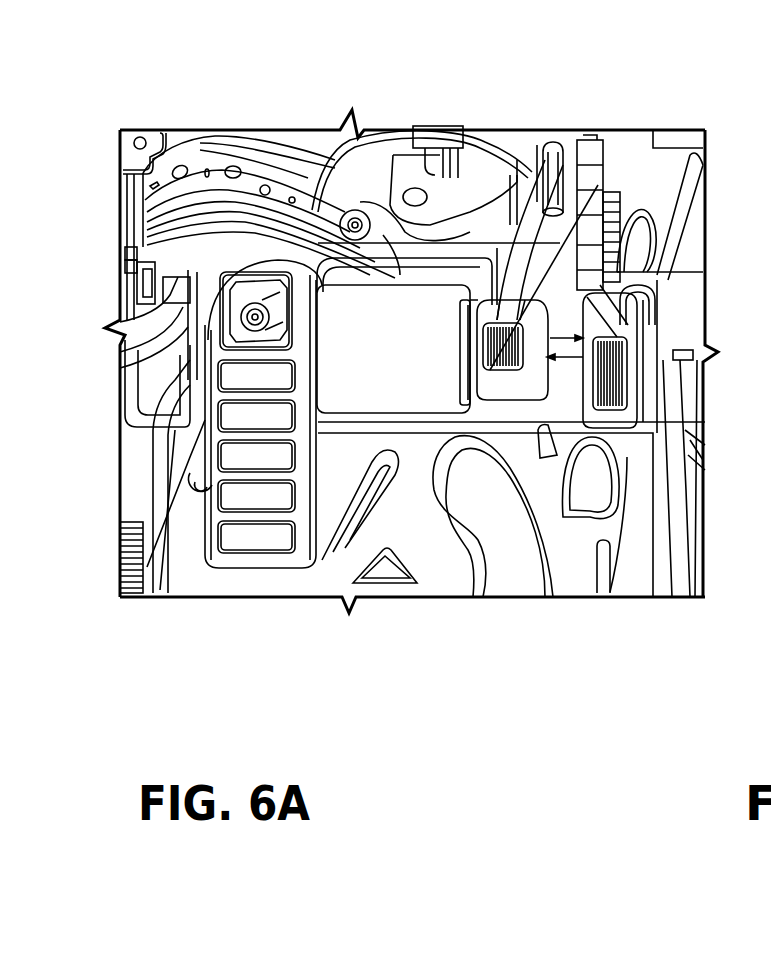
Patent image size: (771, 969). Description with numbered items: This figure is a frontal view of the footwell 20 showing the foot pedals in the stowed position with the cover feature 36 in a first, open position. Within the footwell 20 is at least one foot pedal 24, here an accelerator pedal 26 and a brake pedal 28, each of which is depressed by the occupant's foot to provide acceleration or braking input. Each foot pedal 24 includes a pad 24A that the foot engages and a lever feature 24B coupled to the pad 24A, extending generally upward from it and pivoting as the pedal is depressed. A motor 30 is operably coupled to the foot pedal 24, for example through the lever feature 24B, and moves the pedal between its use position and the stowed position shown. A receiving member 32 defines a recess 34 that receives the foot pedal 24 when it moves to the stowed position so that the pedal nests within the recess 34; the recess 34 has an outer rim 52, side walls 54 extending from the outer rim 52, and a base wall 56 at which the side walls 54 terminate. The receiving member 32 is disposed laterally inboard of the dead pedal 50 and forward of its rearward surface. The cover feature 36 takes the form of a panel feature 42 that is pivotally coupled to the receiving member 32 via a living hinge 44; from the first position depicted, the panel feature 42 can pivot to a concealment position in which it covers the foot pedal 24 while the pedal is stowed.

The footwell 20 is at (662, 555).
The foot pedal 24 is at (522, 165).
The pad 24A is at (598, 185).
The lever feature 24B is at (523, 207).
The accelerator pedal 26 is at (600, 416).
The brake pedal 28 is at (480, 367).
The motor 30 is at (482, 142).
The receiving member 32 is at (370, 305).
The recess 34 is at (583, 340).
The cover feature 36 is at (220, 160).
The panel feature 42 is at (349, 352).
The living hinge 44 is at (463, 340).
The dead pedal 50 is at (247, 457).
The outer rim 52 is at (486, 382).
The side walls 54 is at (546, 360).
The base wall 56 is at (478, 400).